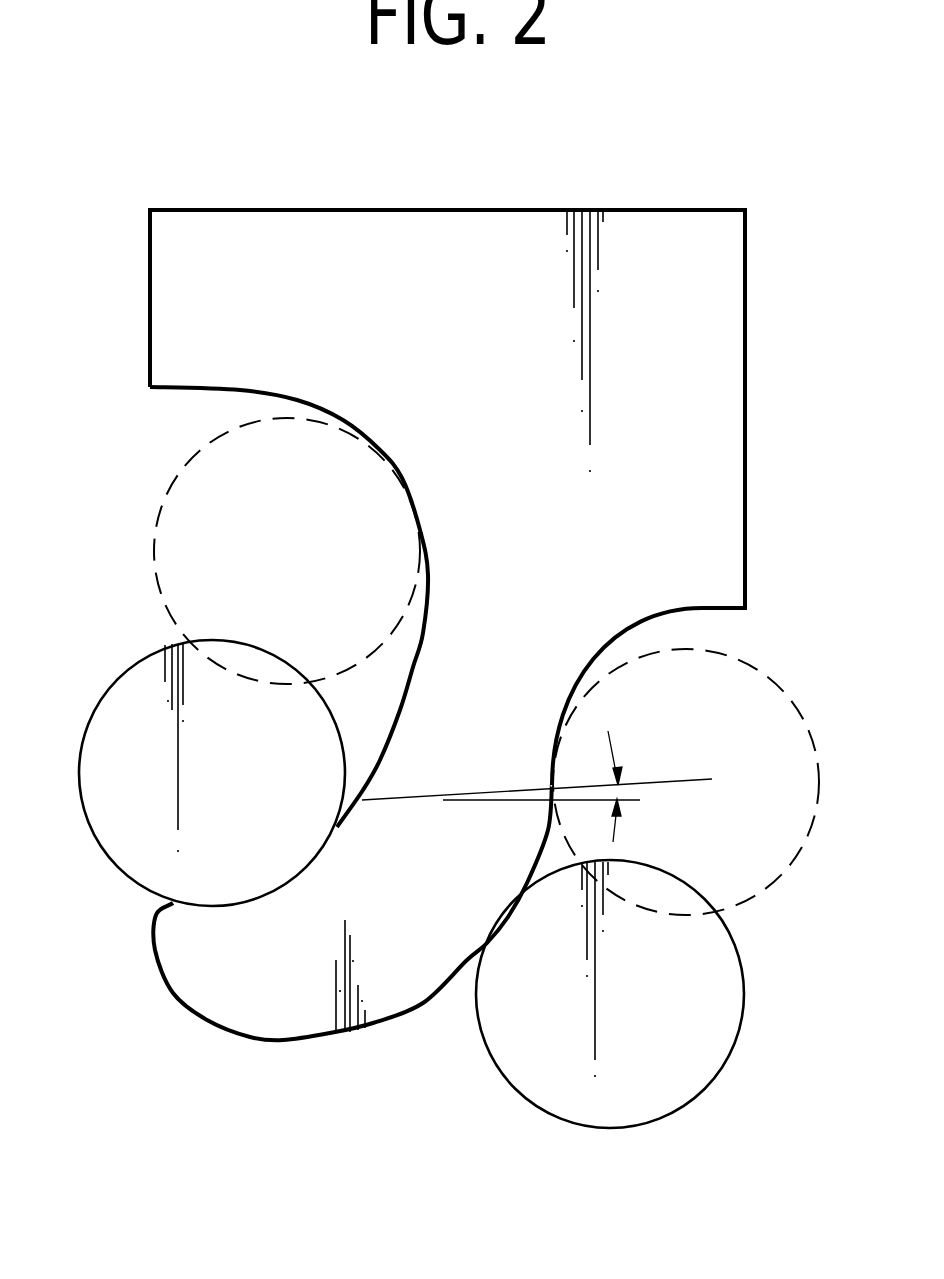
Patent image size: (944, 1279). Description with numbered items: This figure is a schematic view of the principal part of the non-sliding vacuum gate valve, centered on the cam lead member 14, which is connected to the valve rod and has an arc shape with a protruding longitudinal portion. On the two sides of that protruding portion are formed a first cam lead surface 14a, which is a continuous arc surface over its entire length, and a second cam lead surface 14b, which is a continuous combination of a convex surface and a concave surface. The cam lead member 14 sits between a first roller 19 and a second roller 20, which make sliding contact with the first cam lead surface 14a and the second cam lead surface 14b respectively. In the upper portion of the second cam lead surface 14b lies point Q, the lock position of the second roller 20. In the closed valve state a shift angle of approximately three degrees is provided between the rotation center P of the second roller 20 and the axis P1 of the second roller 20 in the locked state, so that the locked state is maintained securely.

The cam lead member 14 is at (447, 649).
The first cam lead surface 14a is at (390, 736).
The second cam lead surface 14b is at (462, 965).
The first roller 19 is at (165, 510).
The second roller 20 is at (792, 720).
The rotation center P is at (375, 790).
The axis of the second roller in the locked state P1 is at (683, 778).
The point Q (lock position) Q is at (596, 786).